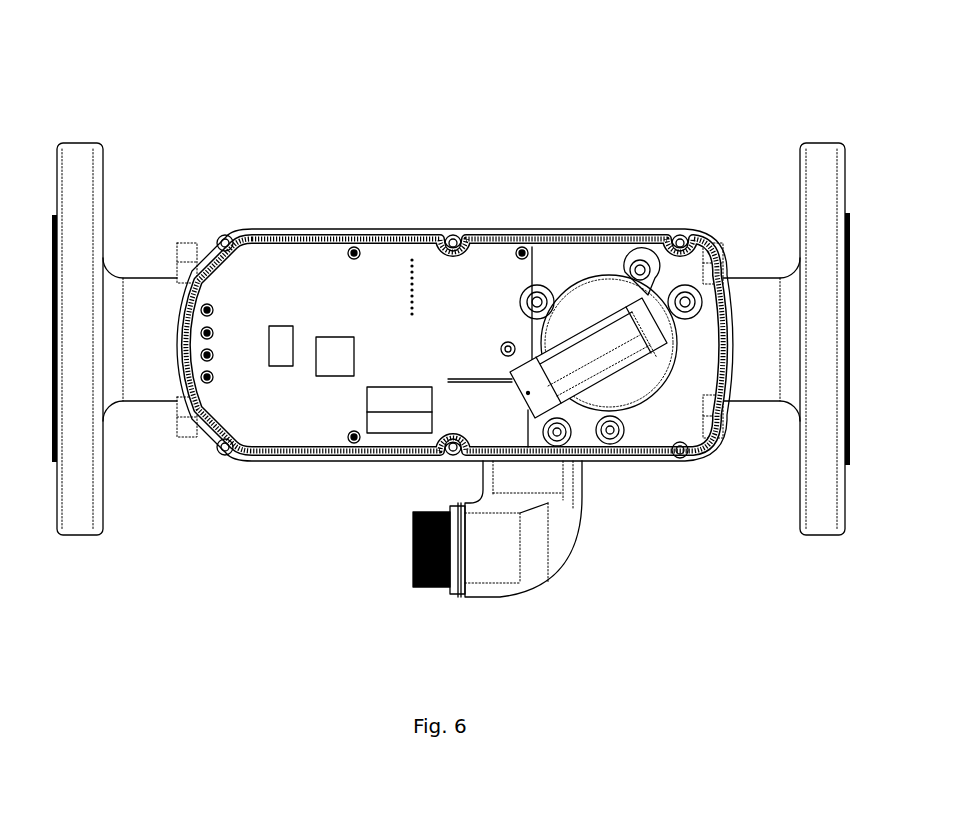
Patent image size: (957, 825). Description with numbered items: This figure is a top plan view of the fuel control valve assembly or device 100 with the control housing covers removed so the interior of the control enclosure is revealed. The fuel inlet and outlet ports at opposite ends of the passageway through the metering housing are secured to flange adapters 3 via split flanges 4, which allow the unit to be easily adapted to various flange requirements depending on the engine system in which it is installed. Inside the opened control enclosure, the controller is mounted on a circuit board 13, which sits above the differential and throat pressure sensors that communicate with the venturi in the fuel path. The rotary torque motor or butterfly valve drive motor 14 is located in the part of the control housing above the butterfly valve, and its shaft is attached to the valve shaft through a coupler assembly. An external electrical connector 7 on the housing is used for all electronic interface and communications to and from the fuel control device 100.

The fuel control valve assembly 100 is at (515, 90).
The flange adapter 3 is at (78, 163).
The split flange 4 is at (211, 258).
The circuit board 13 is at (298, 275).
The butterfly valve drive motor 14 is at (604, 302).
The electrical connector 7 is at (415, 587).